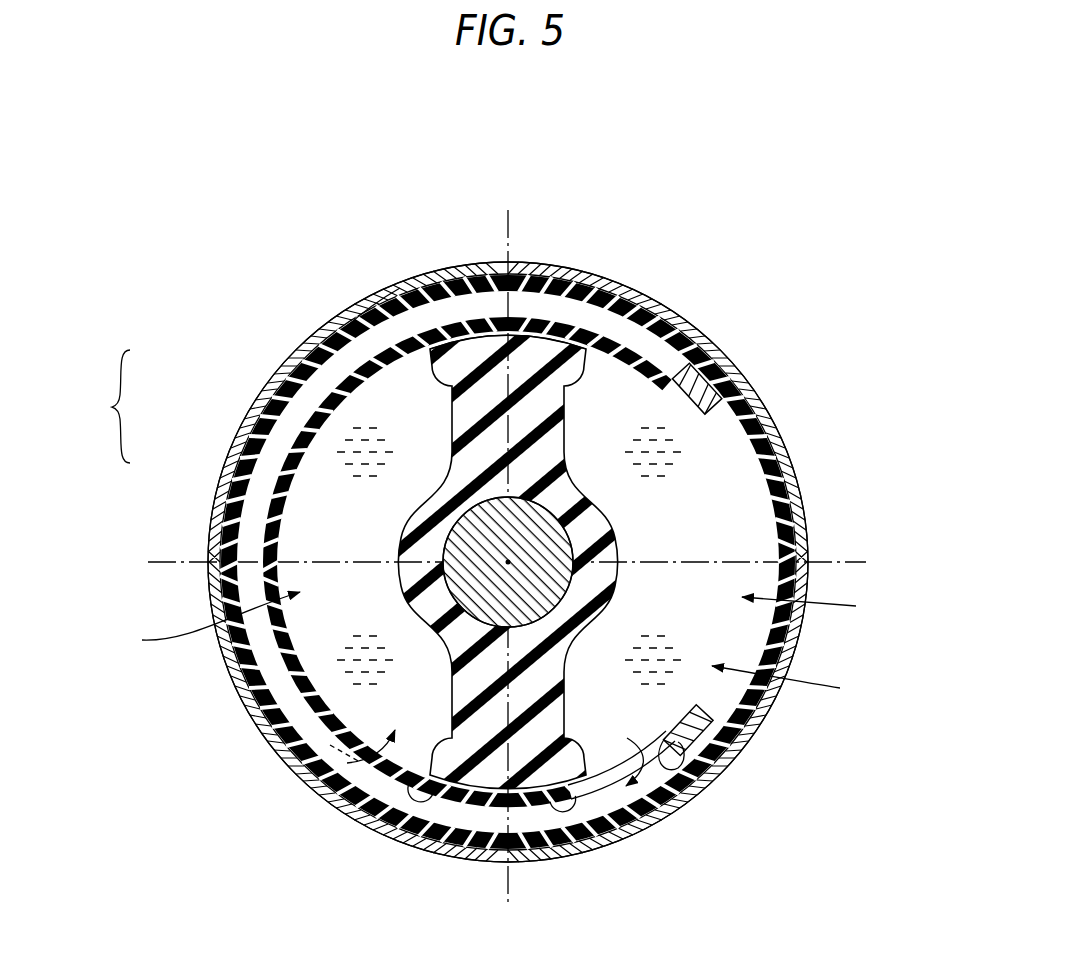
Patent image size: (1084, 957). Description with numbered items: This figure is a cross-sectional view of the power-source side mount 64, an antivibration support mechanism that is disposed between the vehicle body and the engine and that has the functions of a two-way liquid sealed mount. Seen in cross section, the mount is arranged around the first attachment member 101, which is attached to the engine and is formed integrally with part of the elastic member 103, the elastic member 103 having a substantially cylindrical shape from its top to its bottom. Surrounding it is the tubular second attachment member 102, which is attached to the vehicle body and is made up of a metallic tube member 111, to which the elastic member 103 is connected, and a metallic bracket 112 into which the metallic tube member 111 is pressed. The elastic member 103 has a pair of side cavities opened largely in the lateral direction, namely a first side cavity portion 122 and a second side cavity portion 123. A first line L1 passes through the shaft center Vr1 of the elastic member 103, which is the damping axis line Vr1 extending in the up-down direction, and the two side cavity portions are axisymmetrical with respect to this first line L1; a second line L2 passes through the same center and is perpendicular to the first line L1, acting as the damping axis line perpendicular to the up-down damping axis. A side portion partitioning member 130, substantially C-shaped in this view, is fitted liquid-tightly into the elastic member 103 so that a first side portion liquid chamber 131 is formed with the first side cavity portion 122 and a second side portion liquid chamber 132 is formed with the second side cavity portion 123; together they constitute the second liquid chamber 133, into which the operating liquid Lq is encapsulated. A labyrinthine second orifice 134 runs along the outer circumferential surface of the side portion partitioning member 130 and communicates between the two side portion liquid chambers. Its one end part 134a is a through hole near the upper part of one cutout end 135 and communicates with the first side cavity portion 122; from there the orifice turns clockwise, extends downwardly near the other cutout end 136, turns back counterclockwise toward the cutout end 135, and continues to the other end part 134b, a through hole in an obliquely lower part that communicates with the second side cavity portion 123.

The power-source side mount 64 is at (281, 216).
The first attachment member 101 is at (466, 550).
The second attachment member 102 is at (100, 406).
The elastic member 103 is at (472, 343).
The metallic tube member 111 is at (243, 417).
The metallic bracket 112 is at (232, 470).
The first side cavity portion 122 is at (572, 425).
The second side cavity portion 123 is at (338, 330).
The side portion partitioning member 130 is at (727, 765).
The first side portion liquid chamber 131 is at (850, 609).
The second side portion liquid chamber 132 is at (170, 624).
The second liquid chamber 133 is at (621, 765).
The second orifice 134 is at (570, 806).
The one end part of the second orifice 134a is at (690, 772).
The other end part of the second orifice 134b is at (390, 800).
The one cutout end 135 is at (728, 714).
The other cutout end 136 is at (705, 419).
The first line L1 is at (510, 216).
The second line L2 is at (846, 562).
The operating liquid Lq is at (790, 683).
The damping axis line Vr1 is at (470, 580).